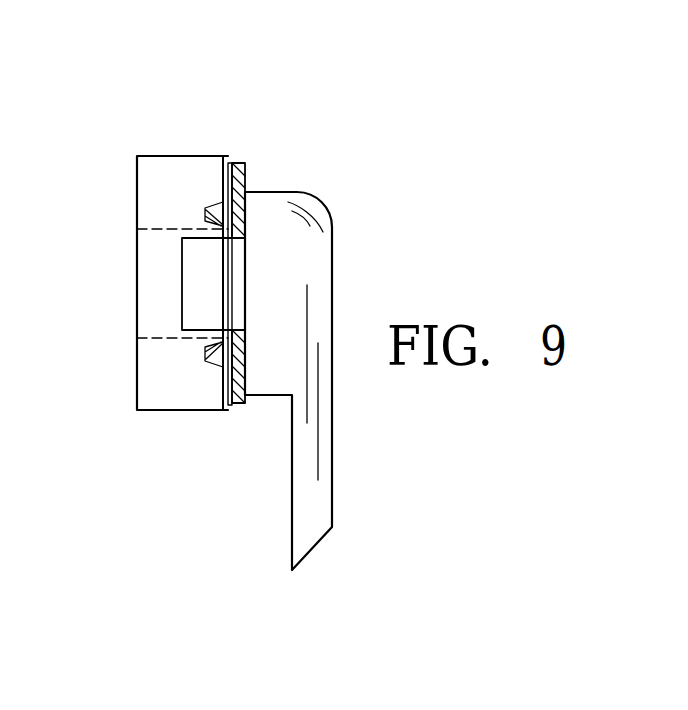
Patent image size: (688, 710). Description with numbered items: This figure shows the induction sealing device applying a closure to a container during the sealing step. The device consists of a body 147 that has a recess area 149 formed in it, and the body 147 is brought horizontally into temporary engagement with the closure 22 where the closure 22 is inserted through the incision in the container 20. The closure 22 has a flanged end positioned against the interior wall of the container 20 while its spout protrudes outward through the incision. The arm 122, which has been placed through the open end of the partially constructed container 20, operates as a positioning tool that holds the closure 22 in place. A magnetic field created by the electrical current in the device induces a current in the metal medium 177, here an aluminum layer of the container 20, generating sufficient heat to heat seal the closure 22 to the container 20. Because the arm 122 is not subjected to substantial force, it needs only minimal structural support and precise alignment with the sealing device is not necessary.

The body 147 is at (157, 155).
The recess area 149 is at (150, 310).
The container 20 is at (228, 162).
The metal medium 177 is at (232, 162).
The closure 22 is at (240, 163).
The arm 122 is at (318, 279).